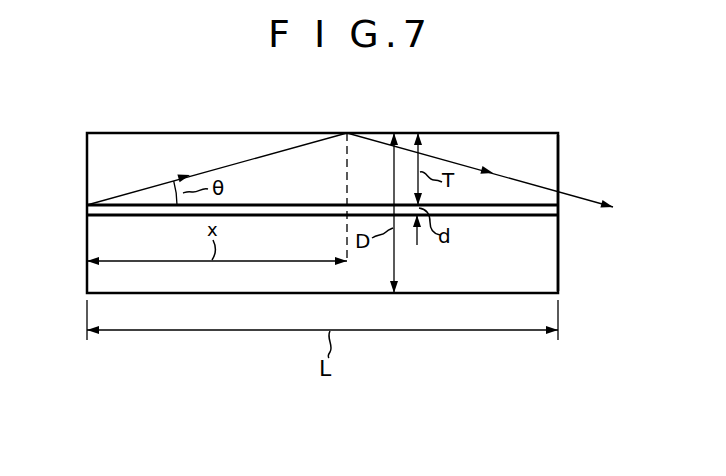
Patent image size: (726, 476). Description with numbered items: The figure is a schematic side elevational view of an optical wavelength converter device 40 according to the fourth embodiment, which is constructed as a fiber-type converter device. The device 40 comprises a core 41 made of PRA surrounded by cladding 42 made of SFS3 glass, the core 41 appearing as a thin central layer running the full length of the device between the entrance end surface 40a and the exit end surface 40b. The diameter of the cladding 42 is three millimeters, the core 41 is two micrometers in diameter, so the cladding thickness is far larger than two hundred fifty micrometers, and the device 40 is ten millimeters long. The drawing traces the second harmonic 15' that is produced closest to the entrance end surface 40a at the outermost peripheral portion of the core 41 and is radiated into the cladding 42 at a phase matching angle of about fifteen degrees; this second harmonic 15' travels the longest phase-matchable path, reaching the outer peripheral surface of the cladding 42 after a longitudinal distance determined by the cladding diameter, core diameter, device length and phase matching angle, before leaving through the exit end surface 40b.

The optical wavelength converter device 40 is at (371, 105).
The entrance end surface 40a is at (89, 206).
The exit end surface 40b is at (558, 165).
The core 41 is at (110, 207).
The cladding 42 is at (100, 158).
The second harmonic 15' is at (350, 150).